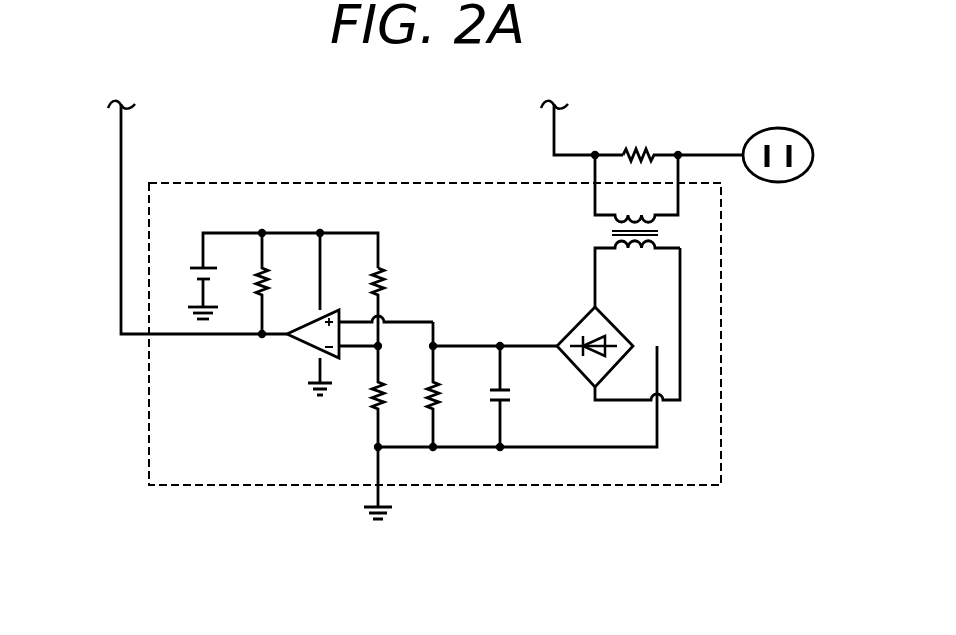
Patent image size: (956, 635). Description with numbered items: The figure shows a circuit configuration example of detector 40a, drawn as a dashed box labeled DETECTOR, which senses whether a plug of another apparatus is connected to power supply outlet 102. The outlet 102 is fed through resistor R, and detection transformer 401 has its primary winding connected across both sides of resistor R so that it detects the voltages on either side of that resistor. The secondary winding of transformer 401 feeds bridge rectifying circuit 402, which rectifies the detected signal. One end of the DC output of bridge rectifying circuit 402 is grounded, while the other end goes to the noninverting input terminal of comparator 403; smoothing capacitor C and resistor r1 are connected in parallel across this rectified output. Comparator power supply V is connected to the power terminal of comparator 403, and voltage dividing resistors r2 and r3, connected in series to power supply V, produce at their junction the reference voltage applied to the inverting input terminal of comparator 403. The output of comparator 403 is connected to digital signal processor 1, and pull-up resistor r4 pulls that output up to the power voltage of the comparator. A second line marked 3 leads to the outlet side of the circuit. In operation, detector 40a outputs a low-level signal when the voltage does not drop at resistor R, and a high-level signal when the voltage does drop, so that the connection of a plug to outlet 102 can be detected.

The digital signal processor 1 is at (80, 108).
The third signal line 3 is at (515, 110).
The detector 40a is at (188, 181).
The power supply outlet 102 is at (778, 128).
The detection transformer 401 is at (600, 233).
The bridge rectifying circuit 402 is at (575, 320).
The comparator 403 is at (303, 344).
The resistor R is at (650, 153).
The resistor r1 is at (447, 384).
The voltage dividing resistor r2 is at (364, 307).
The voltage dividing resistor r3 is at (364, 396).
The pull-up resistor r4 is at (275, 283).
The smoothing capacitor C is at (512, 396).
The comparator power supply V is at (194, 290).